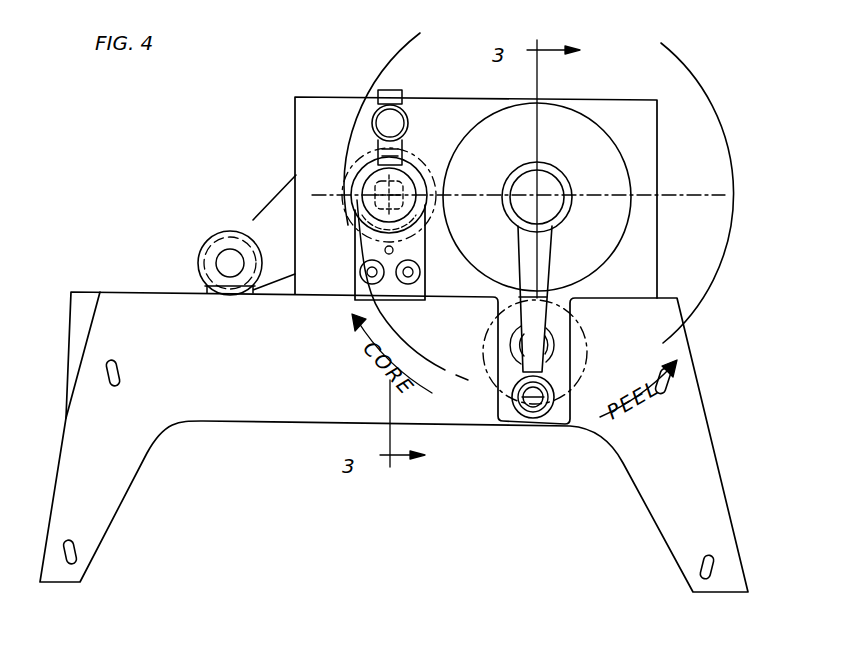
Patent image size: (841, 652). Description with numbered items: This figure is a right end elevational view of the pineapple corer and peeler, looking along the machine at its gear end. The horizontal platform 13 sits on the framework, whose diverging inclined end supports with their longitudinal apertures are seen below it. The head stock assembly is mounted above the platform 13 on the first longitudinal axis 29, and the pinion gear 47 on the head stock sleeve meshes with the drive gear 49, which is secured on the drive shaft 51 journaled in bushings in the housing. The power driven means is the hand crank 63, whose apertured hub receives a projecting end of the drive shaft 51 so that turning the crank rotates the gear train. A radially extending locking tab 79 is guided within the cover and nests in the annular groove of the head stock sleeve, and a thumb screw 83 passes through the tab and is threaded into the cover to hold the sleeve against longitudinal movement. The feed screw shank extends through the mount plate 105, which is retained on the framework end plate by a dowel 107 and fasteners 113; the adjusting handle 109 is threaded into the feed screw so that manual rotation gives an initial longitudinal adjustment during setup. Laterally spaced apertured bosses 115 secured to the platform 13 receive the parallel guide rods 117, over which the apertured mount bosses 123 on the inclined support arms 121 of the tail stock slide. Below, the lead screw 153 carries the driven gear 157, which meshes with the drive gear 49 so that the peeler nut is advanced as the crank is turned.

The horizontal platform 13 is at (138, 292).
The first longitudinal axis 29 is at (352, 222).
The pinion gear 47 is at (432, 180).
The drive gear 49 is at (598, 121).
The drive shaft 51 is at (540, 196).
The hand crank 63 is at (546, 258).
The locking tab 79 is at (389, 90).
The thumb screw 83 is at (409, 126).
The mount plate 105 is at (362, 268).
The dowel 107 is at (394, 250).
The adjusting handle 109 is at (404, 163).
The fasteners 113 is at (412, 274).
The apertured bosses 115 is at (200, 293).
The guide rods 117 is at (226, 262).
The support arms 121 is at (282, 206).
The mount bosses 123 is at (232, 233).
The lead screw 153 is at (556, 349).
The driven gear 157 is at (588, 362).